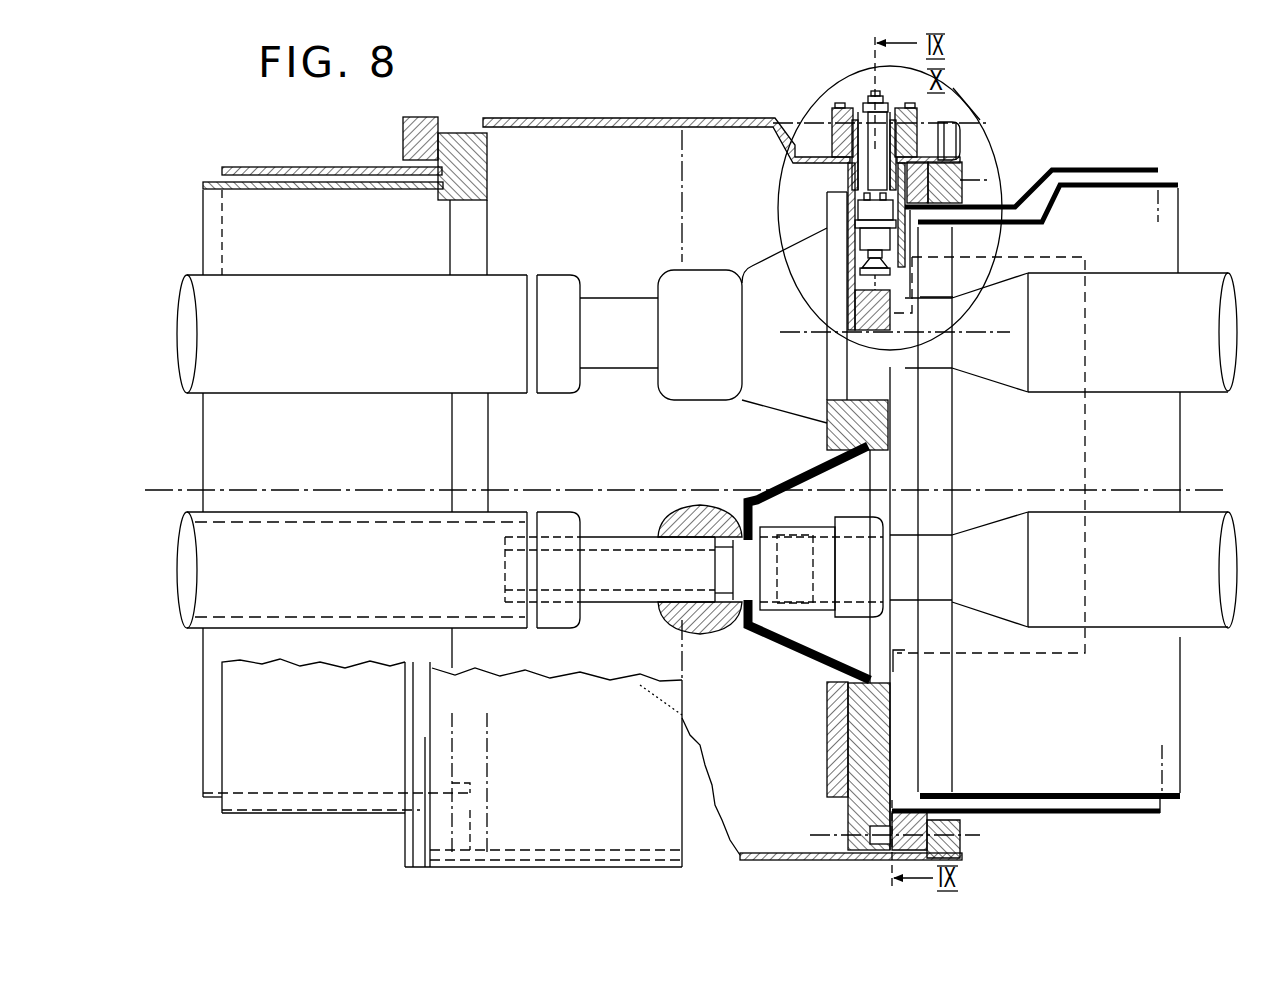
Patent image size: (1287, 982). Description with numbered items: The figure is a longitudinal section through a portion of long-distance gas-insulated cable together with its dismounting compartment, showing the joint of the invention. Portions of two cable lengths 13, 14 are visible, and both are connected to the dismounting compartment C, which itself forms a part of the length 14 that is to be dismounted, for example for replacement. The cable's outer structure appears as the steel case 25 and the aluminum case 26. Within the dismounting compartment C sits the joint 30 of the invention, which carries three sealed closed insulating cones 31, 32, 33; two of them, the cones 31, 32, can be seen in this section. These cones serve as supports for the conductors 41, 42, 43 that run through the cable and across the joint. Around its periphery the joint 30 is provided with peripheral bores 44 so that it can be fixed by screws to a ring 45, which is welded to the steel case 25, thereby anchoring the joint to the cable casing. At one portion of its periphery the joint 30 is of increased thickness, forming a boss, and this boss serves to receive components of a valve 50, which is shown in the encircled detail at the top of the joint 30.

The length 13 is at (268, 166).
The length 14 is at (1035, 460).
The steel case 25 is at (1123, 166).
The aluminum case 26 is at (1115, 188).
The joint 30 is at (895, 720).
The sealed closed insulating cone 31 is at (770, 275).
The sealed closed insulating cone 32 is at (806, 580).
The sealed closed insulating cone 33 is at (780, 647).
The conductor 41 is at (1193, 283).
The conductor 42 is at (1115, 599).
The conductor 43 is at (1200, 608).
The peripheral bores 44 is at (872, 833).
The ring 45 is at (905, 810).
The valve 50 is at (850, 106).
The dismounting compartment C is at (735, 118).